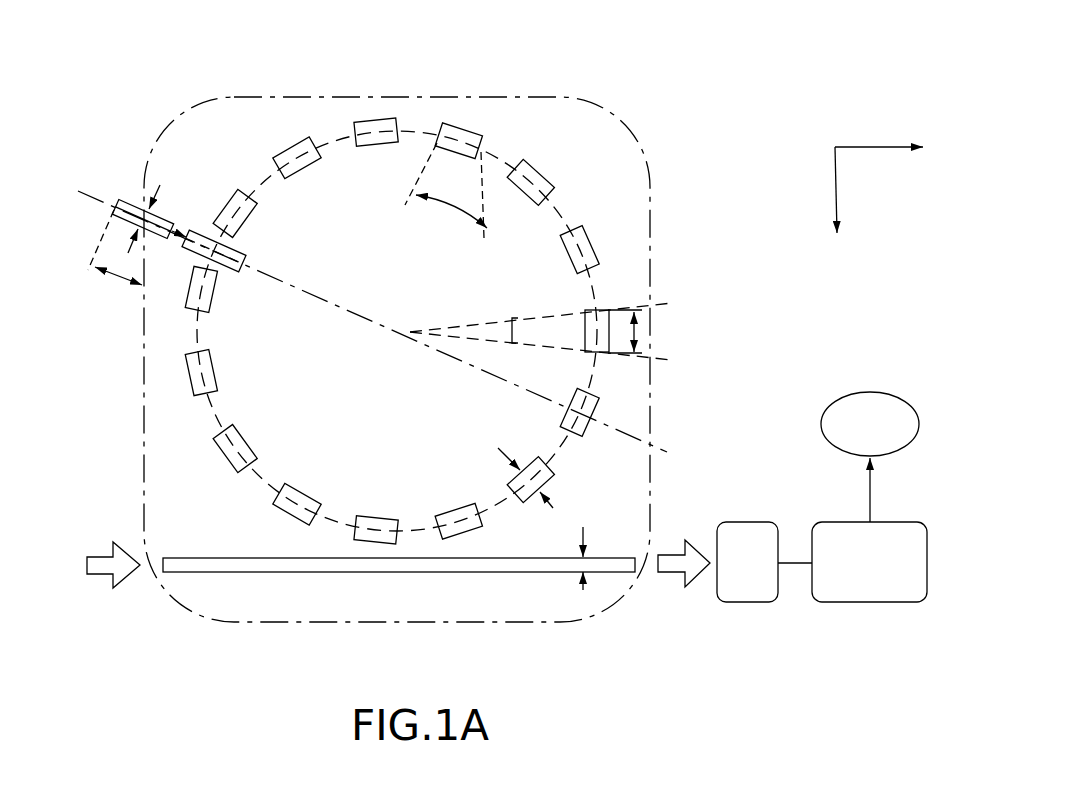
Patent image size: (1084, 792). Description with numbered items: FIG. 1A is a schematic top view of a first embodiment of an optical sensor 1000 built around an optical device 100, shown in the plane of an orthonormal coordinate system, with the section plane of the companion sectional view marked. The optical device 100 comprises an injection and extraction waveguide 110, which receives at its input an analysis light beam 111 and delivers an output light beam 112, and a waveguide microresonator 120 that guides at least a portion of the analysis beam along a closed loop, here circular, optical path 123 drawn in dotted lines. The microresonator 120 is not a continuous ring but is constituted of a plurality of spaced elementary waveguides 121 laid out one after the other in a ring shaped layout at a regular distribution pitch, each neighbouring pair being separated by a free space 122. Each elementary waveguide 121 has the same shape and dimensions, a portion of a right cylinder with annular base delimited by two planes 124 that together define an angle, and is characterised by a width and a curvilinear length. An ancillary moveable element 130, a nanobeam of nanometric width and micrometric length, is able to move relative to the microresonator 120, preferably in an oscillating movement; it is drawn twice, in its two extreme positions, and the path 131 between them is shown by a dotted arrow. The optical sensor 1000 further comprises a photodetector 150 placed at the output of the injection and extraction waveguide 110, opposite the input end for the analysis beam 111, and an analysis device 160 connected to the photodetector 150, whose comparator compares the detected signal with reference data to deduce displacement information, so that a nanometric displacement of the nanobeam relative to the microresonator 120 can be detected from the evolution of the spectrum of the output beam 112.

The optical sensor 1000 is at (704, 71).
The optical device 100 is at (243, 97).
The injection and extraction waveguide 110 is at (412, 573).
The light beam (analysis beam) 111 is at (102, 570).
The light beam at the output 112 is at (675, 568).
The waveguide microresonator 120 is at (453, 283).
The elementary waveguide 121 is at (377, 128).
The free space 122 is at (608, 290).
The optical path 123 is at (413, 130).
The planes delimiting an elementary waveguide 124 is at (668, 302).
The ancillary moveable element (nanobeam) 130 is at (133, 202).
The path of the nanobeam 131 is at (188, 232).
The photodetector 150 is at (750, 588).
The analysis device 160 is at (875, 588).